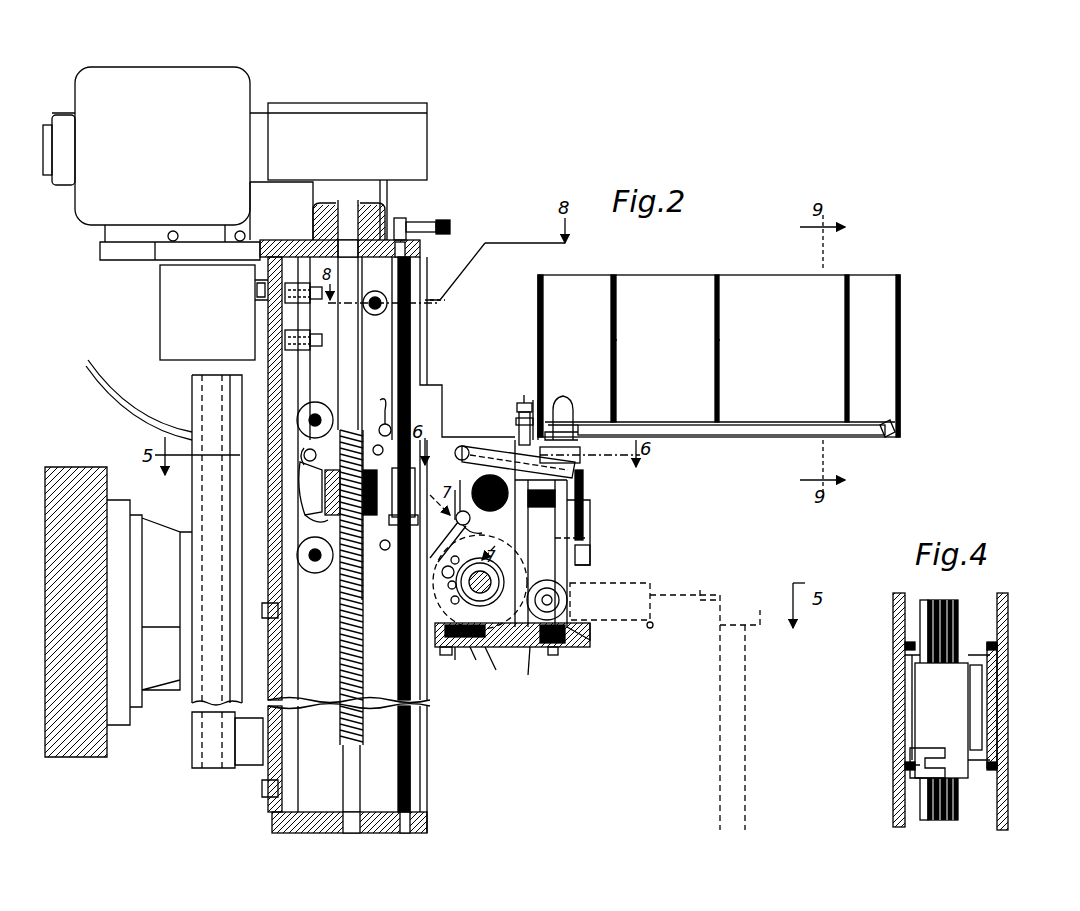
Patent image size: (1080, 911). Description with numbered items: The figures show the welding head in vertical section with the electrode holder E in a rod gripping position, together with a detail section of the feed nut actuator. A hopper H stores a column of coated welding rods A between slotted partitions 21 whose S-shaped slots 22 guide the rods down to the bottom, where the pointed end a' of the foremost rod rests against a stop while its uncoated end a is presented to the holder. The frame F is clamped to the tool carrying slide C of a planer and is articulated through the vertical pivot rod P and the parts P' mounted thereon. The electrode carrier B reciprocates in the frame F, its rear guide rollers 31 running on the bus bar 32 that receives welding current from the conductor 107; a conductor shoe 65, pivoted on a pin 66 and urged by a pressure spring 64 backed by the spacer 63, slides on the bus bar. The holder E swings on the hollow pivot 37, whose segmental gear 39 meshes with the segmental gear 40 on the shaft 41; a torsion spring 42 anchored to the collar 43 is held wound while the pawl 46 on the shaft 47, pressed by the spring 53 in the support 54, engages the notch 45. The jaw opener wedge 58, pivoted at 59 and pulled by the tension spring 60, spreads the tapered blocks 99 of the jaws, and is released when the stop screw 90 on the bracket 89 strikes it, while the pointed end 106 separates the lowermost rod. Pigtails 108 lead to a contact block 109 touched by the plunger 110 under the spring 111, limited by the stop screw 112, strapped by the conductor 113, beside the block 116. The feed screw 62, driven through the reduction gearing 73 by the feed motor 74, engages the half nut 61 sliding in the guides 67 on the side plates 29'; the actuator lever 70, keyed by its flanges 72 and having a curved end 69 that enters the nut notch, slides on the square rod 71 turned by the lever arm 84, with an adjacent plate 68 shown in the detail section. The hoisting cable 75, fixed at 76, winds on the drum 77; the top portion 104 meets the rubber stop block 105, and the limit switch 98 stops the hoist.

In FIG. 2, the reduction gearing driving connection 73 is at (420, 138).
In FIG. 2, the feed motor 74 is at (82, 195).
In FIG. 2, the lever arm 84 is at (412, 222).
In FIG. 2, the limit switch 98 is at (160, 308).
In FIG. 2, the stop block 105 is at (285, 322).
In FIG. 2, the top portion 104 is at (298, 355).
In FIG. 2, the conductor 107 is at (120, 398).
In FIG. 2, the pin 66 is at (302, 457).
In FIG. 2, the conductor shoe 65 is at (306, 497).
In FIG. 2, the pressure spring 64 is at (310, 527).
In FIG. 2, the spacer or backing member 63 is at (322, 449).
In FIG. 2, the rear guide rollers 31 is at (318, 578).
In FIG. 2, the bus bar 32 is at (290, 645).
In FIG. 2, the pivot rod P is at (226, 571).
In FIG. 2, the parts P' is at (249, 719).
In FIG. 2, the tool carrying slide C is at (112, 730).
In FIG. 2, the frame F is at (430, 748).
In FIG. 2, the helically grooved drum 77 is at (375, 290).
In FIG. 2, the feed screw 62 is at (352, 350).
In FIG. 2, the square rod 71 is at (415, 330).
In FIG. 4, the square rod 71 is at (950, 640).
In FIG. 2, the cable 75 is at (412, 355).
In FIG. 2, the cable attachment point 76 is at (378, 411).
In FIG. 2, the half nut section 61 is at (372, 447).
In FIG. 2, the actuator lever 70 is at (403, 496).
In FIG. 4, the actuator lever 70 is at (947, 716).
In FIG. 2, the guides 67 is at (380, 552).
In FIG. 4, the guides 67 is at (905, 646).
In FIG. 2, the spring 53 is at (455, 488).
In FIG. 2, the pivot 59 is at (462, 445).
In FIG. 2, the tension spring 60 is at (490, 474).
In FIG. 2, the bracket 89 is at (518, 420).
In FIG. 2, the stop screw 90 is at (521, 391).
In FIG. 2, the pointed end 106 is at (560, 396).
In FIG. 2, the uncoated end a is at (570, 418).
In FIG. 2, the welding rod A is at (662, 425).
In FIG. 2, the pointed end a' is at (902, 419).
In FIG. 2, the tapered blocks 99 is at (590, 447).
In FIG. 2, the jaw opener cam or wedge 58 is at (576, 472).
In FIG. 2, the flexible metal pigtails 108 is at (585, 490).
In FIG. 2, the support 54 is at (541, 498).
In FIG. 2, the electrode holder E is at (541, 533).
In FIG. 2, the electrode carrier B is at (581, 532).
In FIG. 2, the contact block 109 is at (592, 552).
In FIG. 2, the hollow pivot pin portion 37 is at (665, 698).
In FIG. 2, the block 116 is at (570, 628).
In FIG. 2, the torsion spring 42 is at (500, 573).
In FIG. 2, the notch 45 is at (482, 523).
In FIG. 2, the shaft 47 is at (456, 518).
In FIG. 2, the pawl or dog 46 is at (442, 542).
In FIG. 2, the shaft 41 is at (533, 600).
In FIG. 2, the segmental gear 40 is at (515, 648).
In FIG. 2, the plunger 110 is at (489, 665).
In FIG. 2, the spring 111 is at (466, 664).
In FIG. 2, the flexible conductor strap 113 is at (438, 657).
In FIG. 2, the collar 43 is at (502, 669).
In FIG. 2, the segmental gear 39 is at (531, 674).
In FIG. 2, the stop screw 112 is at (552, 658).
In FIG. 2, the slots 22 is at (712, 320).
In FIG. 2, the slotted partitions 21 is at (714, 345).
In FIG. 2, the hopper H is at (742, 273).
In FIG. 4, the side plates 29' is at (954, 711).
In FIG. 4, the curved end 69 is at (982, 682).
In FIG. 4, the liner 68 is at (1000, 728).
In FIG. 4, the spaced flanges 72 is at (928, 750).